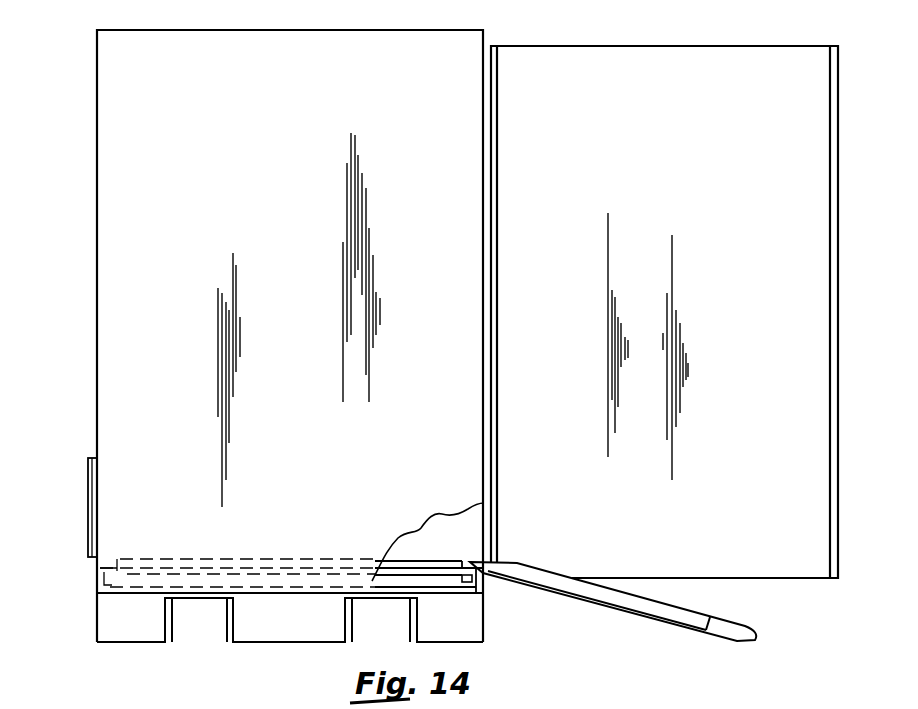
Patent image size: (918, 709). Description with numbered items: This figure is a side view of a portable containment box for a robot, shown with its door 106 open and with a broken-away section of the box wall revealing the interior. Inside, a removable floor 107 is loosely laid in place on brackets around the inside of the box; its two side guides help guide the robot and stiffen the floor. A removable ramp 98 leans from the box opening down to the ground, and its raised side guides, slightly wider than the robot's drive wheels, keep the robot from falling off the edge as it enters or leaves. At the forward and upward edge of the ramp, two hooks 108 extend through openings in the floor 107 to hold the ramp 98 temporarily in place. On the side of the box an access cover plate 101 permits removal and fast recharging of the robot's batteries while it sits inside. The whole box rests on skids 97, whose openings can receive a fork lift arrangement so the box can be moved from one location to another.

The skids 97 is at (170, 620).
The removable ramp 98 is at (604, 608).
The access cover plate 101 is at (88, 527).
The door 106 is at (792, 580).
The removable floor 107 is at (413, 553).
The hooks 108 is at (467, 583).